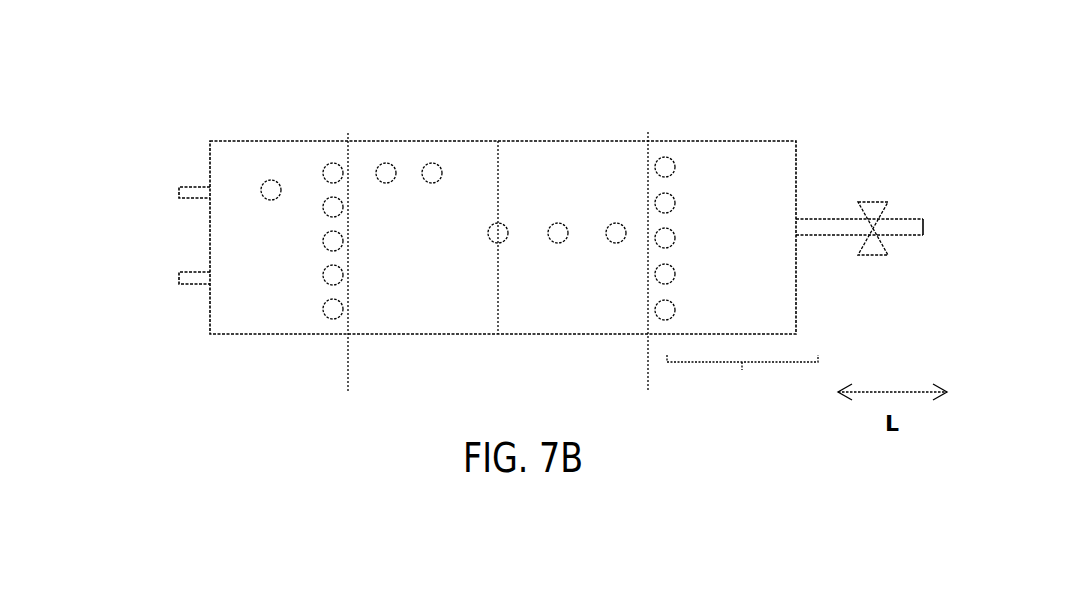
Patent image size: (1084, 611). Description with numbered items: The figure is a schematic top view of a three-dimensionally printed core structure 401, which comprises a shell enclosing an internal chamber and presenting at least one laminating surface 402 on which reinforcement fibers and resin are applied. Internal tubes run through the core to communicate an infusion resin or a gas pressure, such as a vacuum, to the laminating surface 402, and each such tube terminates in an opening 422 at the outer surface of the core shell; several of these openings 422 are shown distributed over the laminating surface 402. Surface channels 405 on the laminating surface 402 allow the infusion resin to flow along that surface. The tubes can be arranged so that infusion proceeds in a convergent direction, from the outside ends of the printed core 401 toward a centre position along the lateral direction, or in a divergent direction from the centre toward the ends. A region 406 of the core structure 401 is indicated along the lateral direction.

The 3D printed core structure 401 is at (182, 248).
The laminating surface 402 is at (603, 331).
The surface channels 405 is at (494, 317).
The downstream section 406 is at (742, 383).
The opening 422 is at (255, 174).